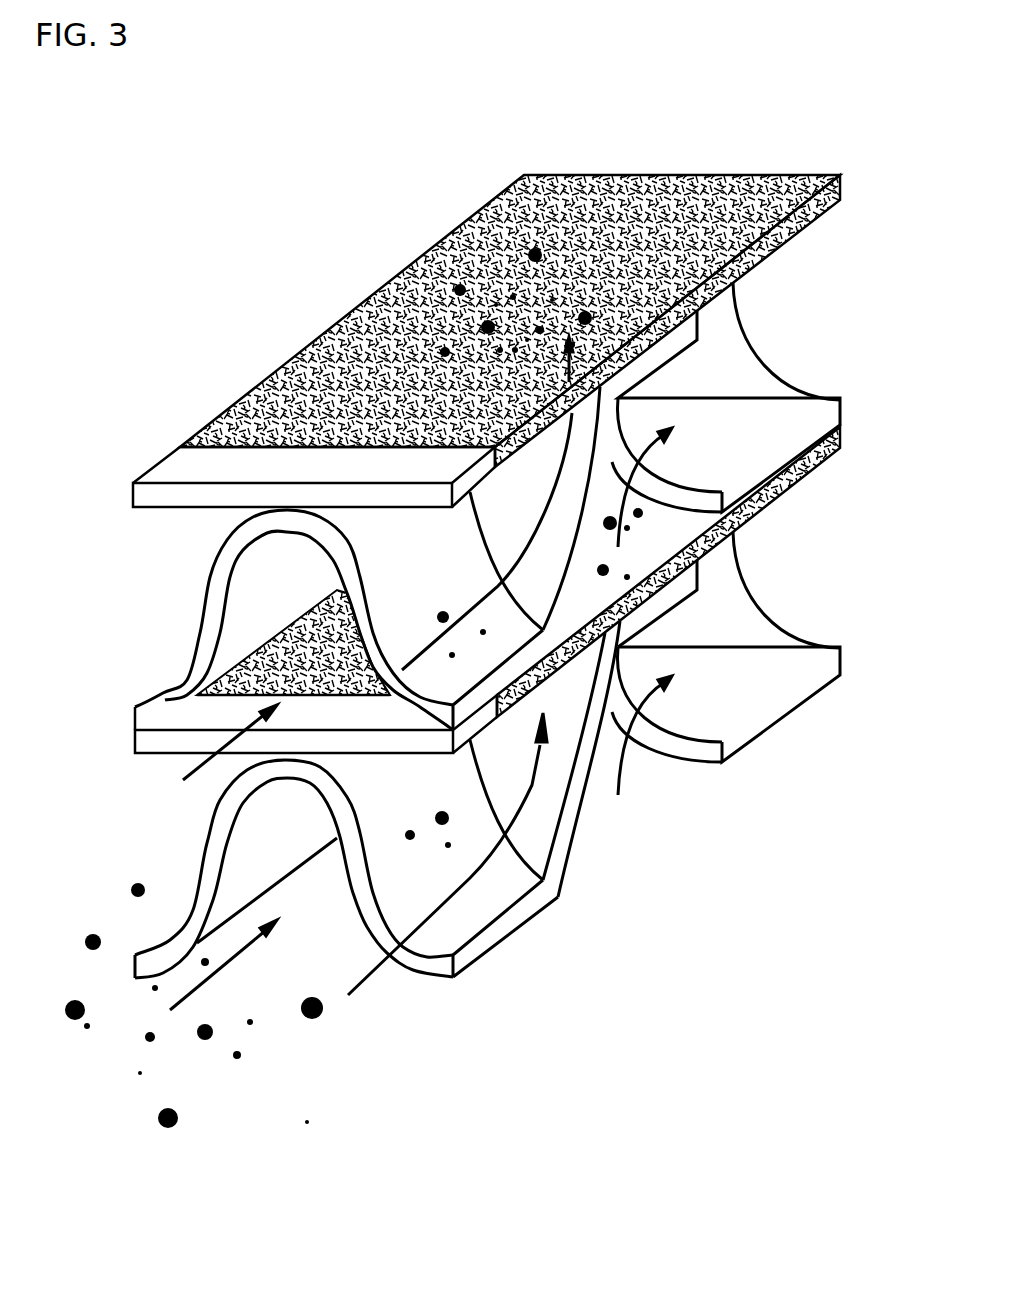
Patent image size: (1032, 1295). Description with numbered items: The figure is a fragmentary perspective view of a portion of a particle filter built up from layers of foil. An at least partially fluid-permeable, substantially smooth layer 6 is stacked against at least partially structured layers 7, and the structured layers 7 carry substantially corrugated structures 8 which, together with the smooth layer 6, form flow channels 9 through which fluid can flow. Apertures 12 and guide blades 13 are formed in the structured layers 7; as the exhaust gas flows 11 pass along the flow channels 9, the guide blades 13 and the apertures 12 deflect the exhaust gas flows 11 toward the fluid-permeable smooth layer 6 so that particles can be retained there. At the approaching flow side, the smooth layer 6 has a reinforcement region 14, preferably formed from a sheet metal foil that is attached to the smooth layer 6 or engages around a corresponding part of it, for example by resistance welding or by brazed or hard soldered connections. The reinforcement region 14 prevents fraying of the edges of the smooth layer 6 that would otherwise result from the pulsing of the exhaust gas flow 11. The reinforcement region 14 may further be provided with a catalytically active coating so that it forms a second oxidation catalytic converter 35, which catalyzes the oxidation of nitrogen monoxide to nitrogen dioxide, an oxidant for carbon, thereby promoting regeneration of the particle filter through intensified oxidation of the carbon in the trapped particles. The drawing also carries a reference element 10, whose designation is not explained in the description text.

The substantially smooth layer 6 is at (505, 185).
The structured layer 7 is at (713, 345).
The corrugated structure 8 is at (228, 555).
The flow channel 9 is at (265, 633).
The particles 10 is at (160, 1125).
The exhaust gas flow 11 is at (350, 992).
The aperture 12 is at (715, 752).
The guide blade 13 is at (565, 845).
The reinforcement region 14 is at (160, 478).
The second oxidation catalytic converter 35 is at (140, 497).